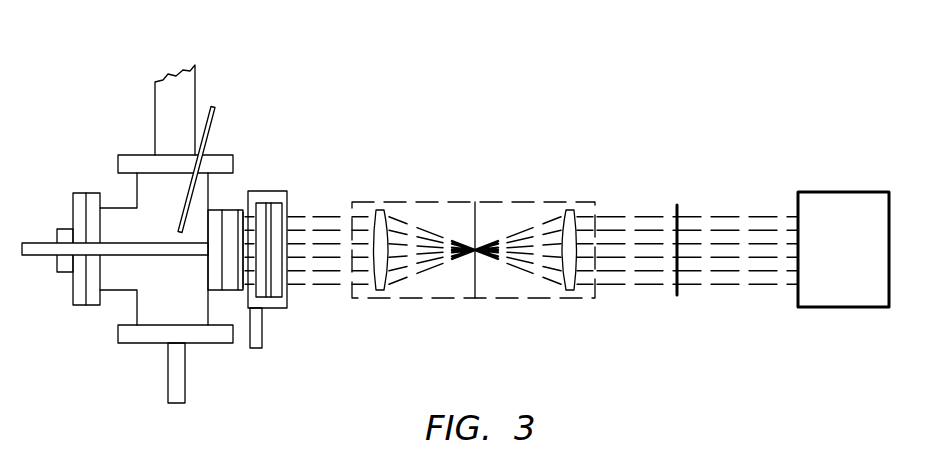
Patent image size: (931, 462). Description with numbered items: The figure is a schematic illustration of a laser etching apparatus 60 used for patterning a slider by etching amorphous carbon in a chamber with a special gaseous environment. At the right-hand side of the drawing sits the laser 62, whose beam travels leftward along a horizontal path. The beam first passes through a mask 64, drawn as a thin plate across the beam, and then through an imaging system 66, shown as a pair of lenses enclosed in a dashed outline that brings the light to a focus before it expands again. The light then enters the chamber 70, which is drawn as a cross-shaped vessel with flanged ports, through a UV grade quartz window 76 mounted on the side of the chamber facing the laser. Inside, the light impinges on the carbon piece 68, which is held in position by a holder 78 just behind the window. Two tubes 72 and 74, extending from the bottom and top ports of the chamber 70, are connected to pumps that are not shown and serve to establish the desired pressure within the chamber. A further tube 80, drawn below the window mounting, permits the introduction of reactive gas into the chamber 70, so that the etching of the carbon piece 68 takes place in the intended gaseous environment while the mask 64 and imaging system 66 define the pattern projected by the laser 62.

The laser etching apparatus 60 is at (403, 75).
The laser 62 is at (843, 293).
The mask 64 is at (677, 222).
The imaging system 66 is at (475, 152).
The carbon piece 68 is at (242, 243).
The chamber 70 is at (183, 292).
The tube 72 is at (180, 380).
The tube 74 is at (188, 102).
The UV grade quartz window 76 is at (278, 270).
The holder 78 is at (230, 216).
The tube 80 is at (258, 330).